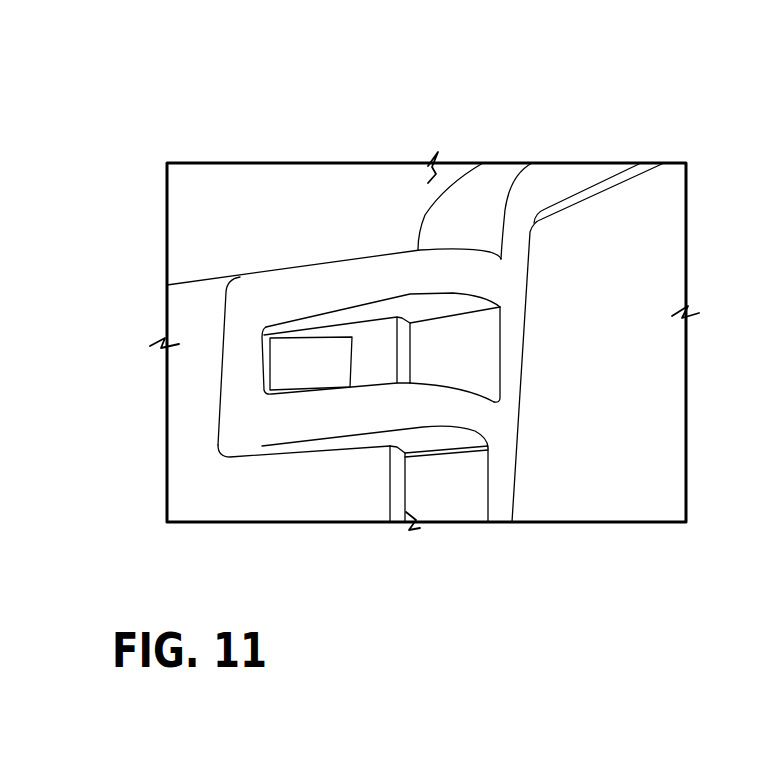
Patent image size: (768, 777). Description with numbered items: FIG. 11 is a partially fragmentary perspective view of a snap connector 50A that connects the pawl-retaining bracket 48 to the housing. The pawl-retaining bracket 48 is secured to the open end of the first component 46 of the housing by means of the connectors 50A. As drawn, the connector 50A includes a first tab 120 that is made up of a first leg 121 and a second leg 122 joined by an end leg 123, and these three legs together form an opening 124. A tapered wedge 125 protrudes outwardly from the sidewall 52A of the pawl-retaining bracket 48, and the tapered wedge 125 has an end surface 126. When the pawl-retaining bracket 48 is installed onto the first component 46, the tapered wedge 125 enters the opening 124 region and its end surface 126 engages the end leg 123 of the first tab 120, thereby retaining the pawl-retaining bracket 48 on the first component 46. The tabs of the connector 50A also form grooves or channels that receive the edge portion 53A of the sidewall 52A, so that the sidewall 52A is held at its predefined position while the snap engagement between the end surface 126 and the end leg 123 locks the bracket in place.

The first component 46 is at (222, 500).
The pawl-retaining bracket 48 is at (638, 238).
The connector 50A is at (332, 267).
The sidewall 52A is at (365, 485).
The edge portion 53A is at (397, 488).
The first tab 120 is at (267, 270).
The first leg 121 is at (380, 280).
The second leg 122 is at (343, 412).
The end leg 123 is at (220, 355).
The opening 124 is at (420, 307).
The tapered wedge 125 is at (288, 358).
The end surface 126 is at (260, 377).